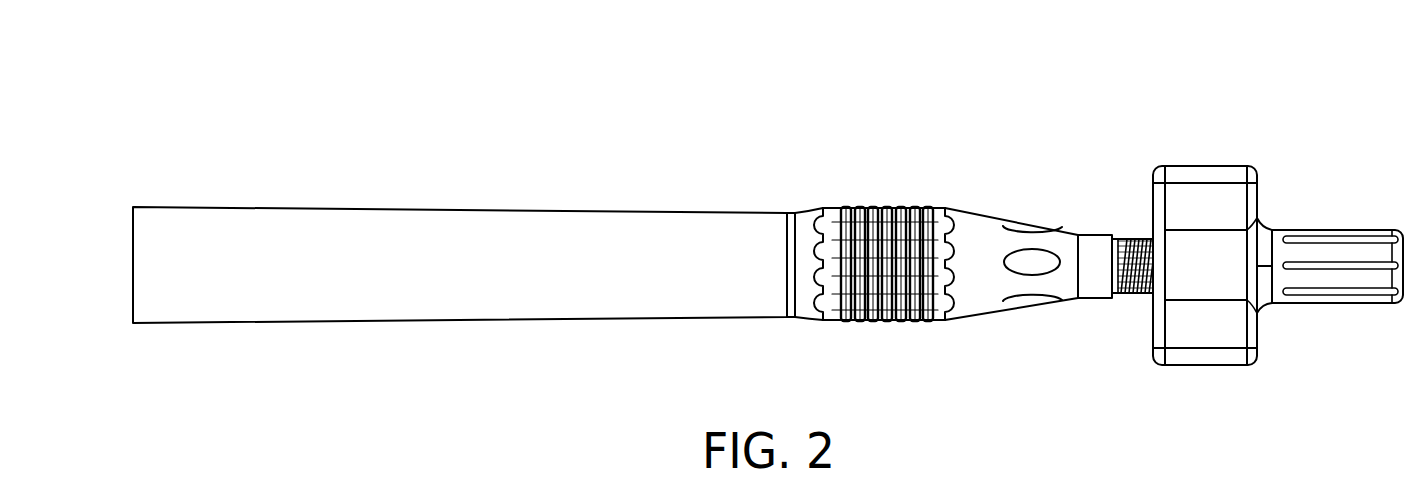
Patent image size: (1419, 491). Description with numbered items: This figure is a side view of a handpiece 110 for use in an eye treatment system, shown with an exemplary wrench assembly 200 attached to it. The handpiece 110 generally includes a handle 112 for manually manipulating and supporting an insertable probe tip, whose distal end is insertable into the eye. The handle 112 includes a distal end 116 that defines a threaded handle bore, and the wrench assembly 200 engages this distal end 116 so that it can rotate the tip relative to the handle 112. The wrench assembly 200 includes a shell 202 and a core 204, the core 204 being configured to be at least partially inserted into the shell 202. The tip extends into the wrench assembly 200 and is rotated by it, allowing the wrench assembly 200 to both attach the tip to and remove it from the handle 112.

The handpiece 110 is at (303, 131).
The handle 112 is at (427, 232).
The distal end 116 is at (1132, 227).
The wrench assembly 200 is at (1270, 218).
The shell 202 is at (1202, 192).
The core 204 is at (1153, 167).